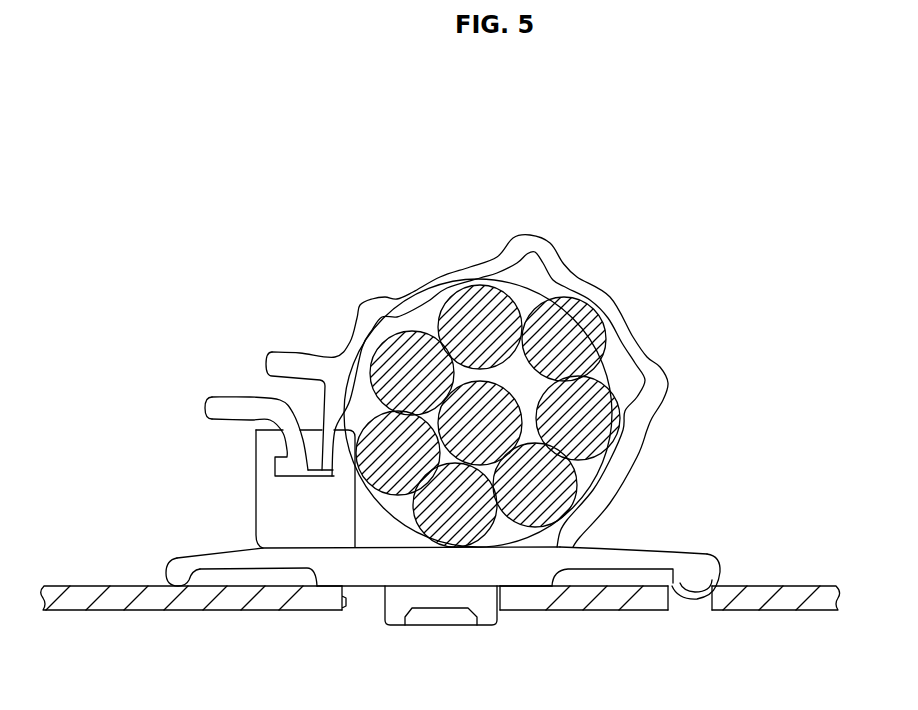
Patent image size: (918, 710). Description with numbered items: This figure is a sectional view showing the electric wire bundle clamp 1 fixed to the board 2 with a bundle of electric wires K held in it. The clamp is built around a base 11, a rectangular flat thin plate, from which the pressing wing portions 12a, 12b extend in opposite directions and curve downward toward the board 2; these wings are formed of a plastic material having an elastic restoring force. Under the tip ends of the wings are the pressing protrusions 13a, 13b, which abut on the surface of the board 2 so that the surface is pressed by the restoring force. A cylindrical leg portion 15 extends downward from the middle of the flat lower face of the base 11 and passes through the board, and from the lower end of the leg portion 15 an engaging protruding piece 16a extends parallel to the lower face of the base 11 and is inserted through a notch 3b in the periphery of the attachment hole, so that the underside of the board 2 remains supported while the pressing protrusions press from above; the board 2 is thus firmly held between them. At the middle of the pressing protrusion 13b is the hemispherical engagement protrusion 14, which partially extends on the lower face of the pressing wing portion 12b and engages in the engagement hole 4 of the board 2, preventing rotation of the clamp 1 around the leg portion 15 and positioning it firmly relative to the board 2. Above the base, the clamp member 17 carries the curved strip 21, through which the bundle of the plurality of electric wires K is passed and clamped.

The electric wire bundle clamp 1 is at (654, 206).
The board 2 is at (797, 607).
The notches 3b is at (345, 610).
The engagement hole 4 is at (682, 607).
The base 11 is at (370, 573).
The pressing wing portion 12a is at (223, 552).
The pressing wing portion 12b is at (642, 547).
The pressing protrusion 13a is at (170, 560).
The pressing protrusion 13b is at (717, 557).
The engagement protrusion 14 is at (703, 597).
The leg portion 15 is at (490, 623).
The engaging protruding piece 16a is at (440, 620).
The clamp member 17 is at (698, 318).
The curved strip 21 is at (433, 277).
The electric wires K is at (583, 302).